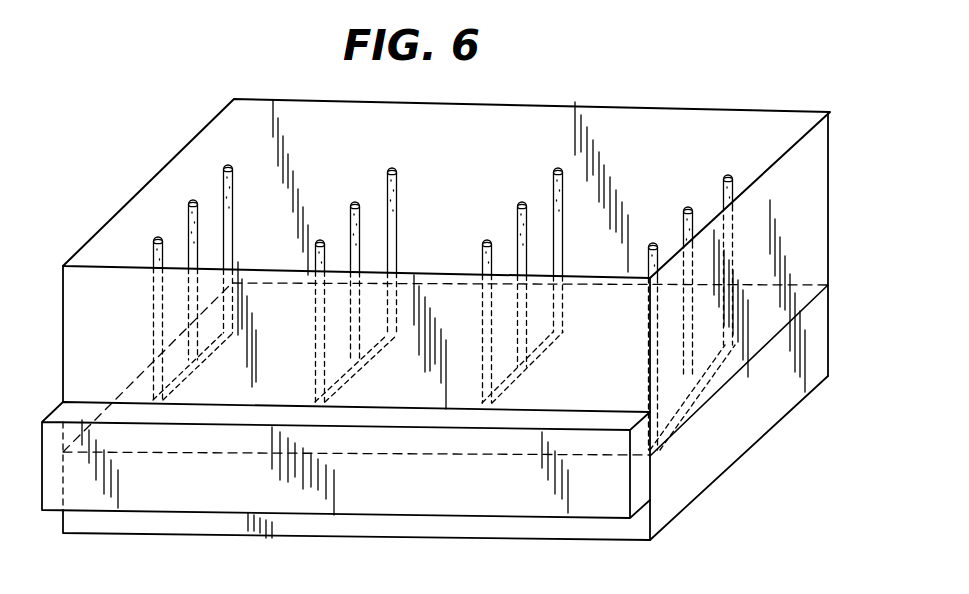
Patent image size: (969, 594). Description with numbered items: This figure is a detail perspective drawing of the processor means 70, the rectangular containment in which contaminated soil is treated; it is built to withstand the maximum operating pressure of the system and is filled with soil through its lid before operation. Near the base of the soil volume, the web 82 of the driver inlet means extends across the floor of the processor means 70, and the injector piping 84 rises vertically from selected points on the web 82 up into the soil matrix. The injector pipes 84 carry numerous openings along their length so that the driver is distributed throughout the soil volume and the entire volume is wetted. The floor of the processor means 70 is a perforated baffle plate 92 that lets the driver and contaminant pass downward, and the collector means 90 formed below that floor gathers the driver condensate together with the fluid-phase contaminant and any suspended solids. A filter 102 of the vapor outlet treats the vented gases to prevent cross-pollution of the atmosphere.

The processor means 70 is at (822, 152).
The web 82 is at (541, 201).
The injector piping 84 is at (397, 178).
The collector means 90 is at (760, 418).
The perforated baffle plate 92 is at (823, 292).
The filter 102 is at (640, 500).